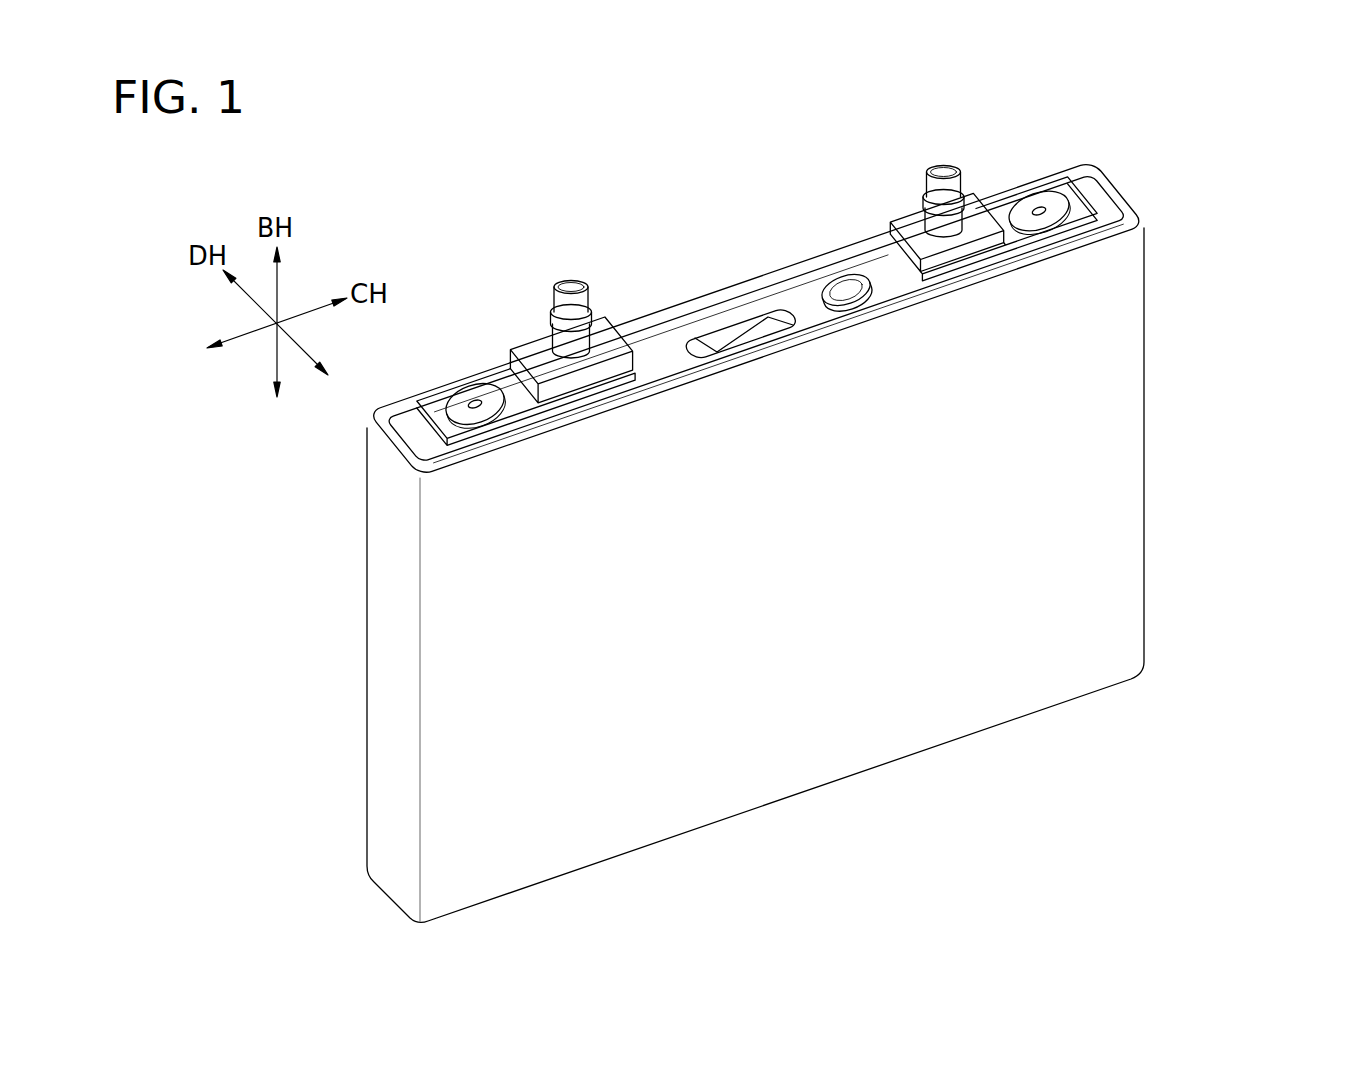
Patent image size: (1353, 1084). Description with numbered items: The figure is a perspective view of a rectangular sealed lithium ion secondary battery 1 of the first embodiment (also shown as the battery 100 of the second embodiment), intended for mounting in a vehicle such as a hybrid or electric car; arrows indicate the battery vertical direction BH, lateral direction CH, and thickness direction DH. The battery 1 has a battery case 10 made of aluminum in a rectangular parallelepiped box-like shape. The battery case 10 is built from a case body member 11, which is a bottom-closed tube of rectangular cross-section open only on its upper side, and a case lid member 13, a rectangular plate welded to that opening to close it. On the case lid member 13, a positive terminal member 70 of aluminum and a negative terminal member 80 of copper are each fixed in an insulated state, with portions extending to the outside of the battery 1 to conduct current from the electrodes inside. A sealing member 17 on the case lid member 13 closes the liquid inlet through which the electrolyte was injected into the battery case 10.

The lithium ion secondary battery 1 is at (468, 195).
The secondary battery 100 is at (828, 526).
The battery case 10 is at (828, 541).
The case body member 11 is at (1112, 510).
The case lid member 13 is at (662, 363).
The sealing member 17 is at (837, 282).
The positive terminal member 70 is at (512, 335).
The negative terminal member 80 is at (985, 191).